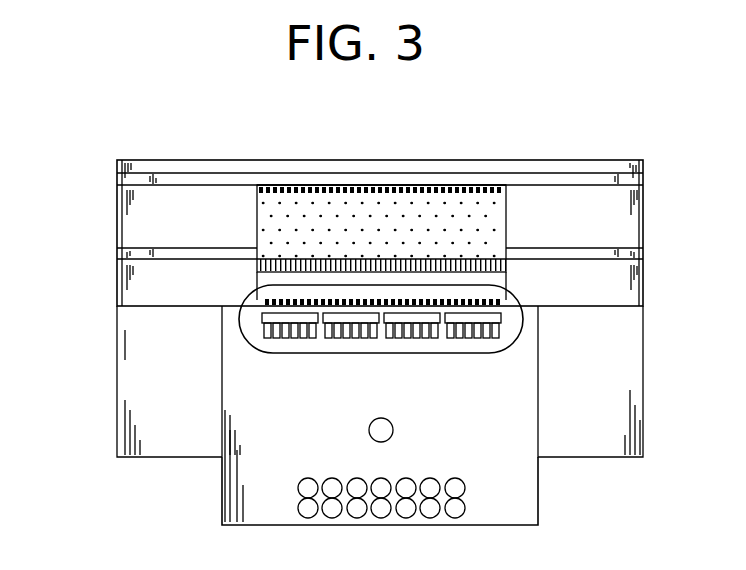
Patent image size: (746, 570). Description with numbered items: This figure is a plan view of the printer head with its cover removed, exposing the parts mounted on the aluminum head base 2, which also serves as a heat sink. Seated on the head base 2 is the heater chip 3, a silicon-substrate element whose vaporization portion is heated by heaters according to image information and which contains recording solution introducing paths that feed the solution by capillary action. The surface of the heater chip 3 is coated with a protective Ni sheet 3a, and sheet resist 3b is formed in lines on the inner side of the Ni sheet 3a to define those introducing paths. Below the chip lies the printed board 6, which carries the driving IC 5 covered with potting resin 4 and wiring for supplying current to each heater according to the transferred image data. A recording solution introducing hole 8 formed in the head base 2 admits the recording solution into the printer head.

The head base 2 is at (627, 220).
The heater chip 3 is at (304, 216).
The protective Ni sheet 3a is at (258, 223).
The sheet resist 3b is at (258, 269).
The potting resin 4 is at (508, 302).
The driving IC 5 is at (500, 322).
The printed board 6 is at (495, 495).
The recording solution introducing hole 8 is at (393, 430).